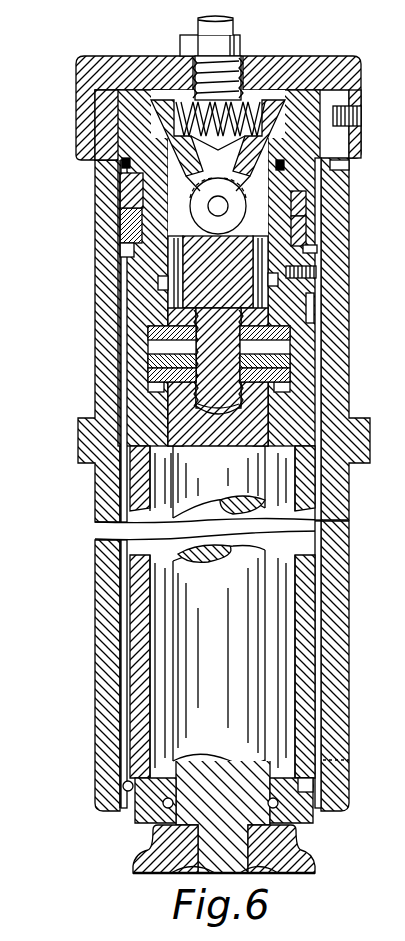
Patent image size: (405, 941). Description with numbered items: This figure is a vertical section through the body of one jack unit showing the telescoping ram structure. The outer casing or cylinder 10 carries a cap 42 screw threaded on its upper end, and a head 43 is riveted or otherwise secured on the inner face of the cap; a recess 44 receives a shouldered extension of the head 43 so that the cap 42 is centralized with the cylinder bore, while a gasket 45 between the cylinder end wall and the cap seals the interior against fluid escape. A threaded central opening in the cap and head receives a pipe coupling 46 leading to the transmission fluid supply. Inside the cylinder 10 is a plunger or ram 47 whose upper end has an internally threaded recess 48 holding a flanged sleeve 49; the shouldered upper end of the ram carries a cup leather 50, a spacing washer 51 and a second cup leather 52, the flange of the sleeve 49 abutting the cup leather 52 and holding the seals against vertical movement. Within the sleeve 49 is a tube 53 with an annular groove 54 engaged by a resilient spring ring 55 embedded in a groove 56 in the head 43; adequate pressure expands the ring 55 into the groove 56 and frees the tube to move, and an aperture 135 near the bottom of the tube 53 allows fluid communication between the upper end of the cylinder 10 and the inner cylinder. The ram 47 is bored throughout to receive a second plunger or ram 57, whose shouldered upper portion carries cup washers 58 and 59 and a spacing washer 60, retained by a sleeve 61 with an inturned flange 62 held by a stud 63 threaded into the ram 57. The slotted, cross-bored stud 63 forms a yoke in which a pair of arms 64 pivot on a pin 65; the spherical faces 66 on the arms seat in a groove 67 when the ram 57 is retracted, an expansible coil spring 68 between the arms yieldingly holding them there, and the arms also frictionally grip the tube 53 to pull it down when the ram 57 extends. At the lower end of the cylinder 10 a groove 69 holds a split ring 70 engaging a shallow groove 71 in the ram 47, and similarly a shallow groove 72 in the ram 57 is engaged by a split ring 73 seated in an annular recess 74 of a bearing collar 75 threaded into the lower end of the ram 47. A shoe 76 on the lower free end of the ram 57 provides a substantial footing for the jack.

The outer casing or cylinder 10 is at (328, 250).
The cap 42 is at (345, 83).
The head 43 is at (322, 59).
The recess 44 is at (303, 85).
The gasket 45 is at (93, 82).
The pipe coupling 46 is at (232, 14).
The plunger or ram 47 is at (313, 312).
The internally threaded recess 48 is at (300, 215).
The flanged sleeve 49 is at (300, 178).
The cup leather 50 is at (302, 236).
The spacing washer 51 is at (300, 195).
The second cup leather 52 is at (335, 160).
The tube 53 is at (272, 272).
The annular groove 54 is at (128, 178).
The resilient spring ring 55 is at (100, 152).
The groove 56 is at (112, 150).
The second plunger or ram 57 is at (235, 451).
The cup washer 58 is at (285, 356).
The cup washer 59 is at (306, 297).
The spacing washer 60 is at (300, 340).
The sleeve 61 is at (143, 283).
The inturned flange 62 is at (185, 362).
The stud 63 is at (157, 373).
The arms 64 is at (207, 200).
The pin 65 is at (158, 243).
The spherical faces 66 is at (143, 115).
The groove 67 is at (404, 98).
The expansible coil spring 68 is at (145, 118).
The groove 69 is at (110, 798).
The split ring 70 is at (130, 805).
The shallow groove 71 is at (128, 757).
The shallow groove 72 is at (262, 758).
The split ring 73 is at (292, 818).
The annular recess 74 is at (300, 762).
The bearing collar 75 is at (307, 744).
The shoe 76 is at (290, 853).
The aperture 135 is at (150, 277).